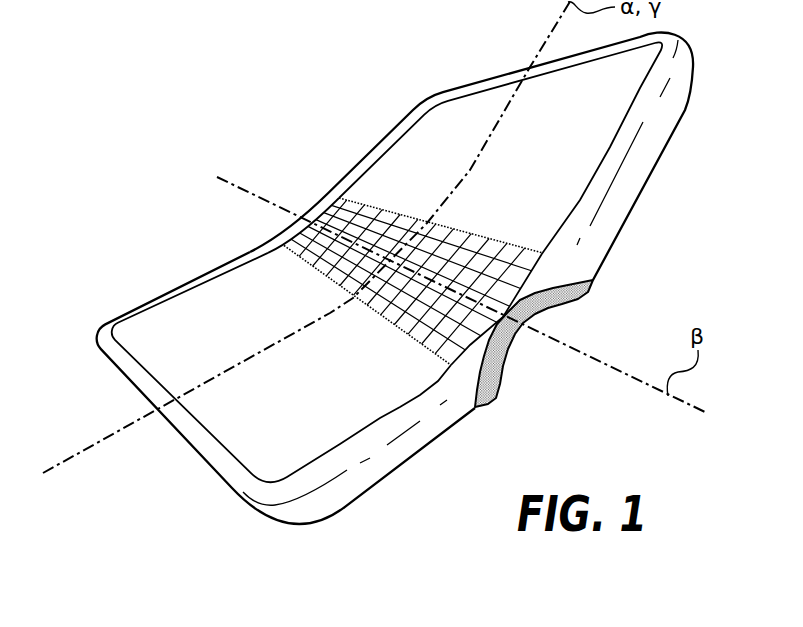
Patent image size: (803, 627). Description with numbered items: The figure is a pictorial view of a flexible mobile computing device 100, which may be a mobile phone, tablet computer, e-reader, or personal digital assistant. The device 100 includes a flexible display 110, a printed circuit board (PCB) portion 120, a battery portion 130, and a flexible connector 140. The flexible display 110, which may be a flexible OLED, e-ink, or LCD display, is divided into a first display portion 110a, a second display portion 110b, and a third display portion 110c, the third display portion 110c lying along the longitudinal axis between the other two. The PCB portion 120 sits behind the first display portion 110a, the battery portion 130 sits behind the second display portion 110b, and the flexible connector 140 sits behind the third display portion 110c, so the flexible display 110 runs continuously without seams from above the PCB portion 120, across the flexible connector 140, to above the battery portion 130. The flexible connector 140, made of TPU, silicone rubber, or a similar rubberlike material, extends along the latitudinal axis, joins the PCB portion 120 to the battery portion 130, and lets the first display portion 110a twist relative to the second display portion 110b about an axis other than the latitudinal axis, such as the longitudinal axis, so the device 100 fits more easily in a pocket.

The flexible mobile computing device 100 is at (220, 102).
The flexible display 110 is at (195, 330).
The first display portion 110a is at (427, 127).
The second display portion 110b is at (217, 287).
The third display portion 110c is at (350, 206).
The printed circuit board portion 120 is at (676, 155).
The battery portion 130 is at (390, 493).
The flexible connector 140 is at (524, 353).